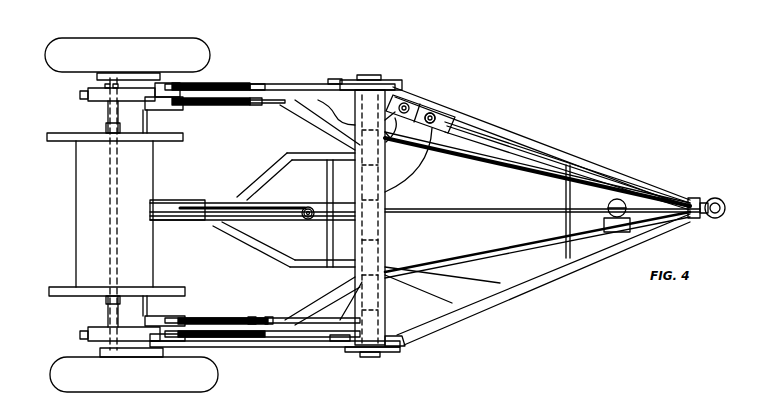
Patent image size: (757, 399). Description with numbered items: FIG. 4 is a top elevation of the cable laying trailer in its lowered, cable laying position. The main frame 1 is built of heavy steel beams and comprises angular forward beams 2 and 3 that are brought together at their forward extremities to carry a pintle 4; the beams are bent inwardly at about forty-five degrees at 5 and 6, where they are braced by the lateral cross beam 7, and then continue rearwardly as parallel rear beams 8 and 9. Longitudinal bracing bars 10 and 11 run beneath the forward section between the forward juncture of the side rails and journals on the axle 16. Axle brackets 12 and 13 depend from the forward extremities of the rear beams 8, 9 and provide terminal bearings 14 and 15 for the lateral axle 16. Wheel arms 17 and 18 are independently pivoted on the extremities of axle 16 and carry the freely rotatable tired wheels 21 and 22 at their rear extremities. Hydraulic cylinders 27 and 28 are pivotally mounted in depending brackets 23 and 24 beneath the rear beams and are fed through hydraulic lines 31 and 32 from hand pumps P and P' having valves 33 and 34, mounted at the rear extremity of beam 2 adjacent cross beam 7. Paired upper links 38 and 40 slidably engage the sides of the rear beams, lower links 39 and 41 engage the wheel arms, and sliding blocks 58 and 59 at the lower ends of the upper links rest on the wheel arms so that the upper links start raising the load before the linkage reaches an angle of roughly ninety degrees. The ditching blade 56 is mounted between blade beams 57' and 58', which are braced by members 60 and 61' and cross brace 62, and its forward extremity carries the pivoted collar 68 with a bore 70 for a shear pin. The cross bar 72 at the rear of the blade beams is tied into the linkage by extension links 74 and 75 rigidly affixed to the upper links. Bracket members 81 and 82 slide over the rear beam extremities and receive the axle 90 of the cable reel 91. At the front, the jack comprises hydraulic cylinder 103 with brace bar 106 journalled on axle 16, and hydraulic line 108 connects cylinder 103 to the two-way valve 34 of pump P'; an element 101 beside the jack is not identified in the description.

The main frame 1 is at (515, 124).
The angular forward beam 2 is at (532, 142).
The angular forward beam 3 is at (525, 276).
The pintle 4 is at (713, 198).
The inward bend of beam 2 5 is at (395, 94).
The inward bend of beam 3 6 is at (402, 334).
The lateral cross beam 7 is at (385, 233).
The rear beam 8 is at (80, 94).
The rear beam 9 is at (80, 334).
The longitudinal bracing bar 10 is at (474, 171).
The longitudinal bracing bar 11 is at (469, 247).
The axle bracket 12 is at (385, 80).
The axle bracket 13 is at (392, 347).
The terminal bearing 14 is at (365, 75).
The terminal bearing 15 is at (370, 353).
The lateral axle 16 is at (385, 302).
The wheel arm 17 is at (162, 83).
The wheel arm 18 is at (170, 348).
The tired wheel 21 is at (163, 38).
The tired wheel 22 is at (55, 382).
The depending bracket 23 is at (336, 79).
The depending bracket 24 is at (345, 347).
The hydraulic cylinder 27 is at (296, 84).
The hydraulic cylinder 28 is at (306, 347).
The hydraulic line 31 is at (325, 126).
The hydraulic line 32 is at (403, 172).
The valve 33 is at (416, 98).
The valve 34 is at (446, 112).
The upper link 38 is at (228, 83).
The lower link 39 is at (257, 84).
The upper link 40 is at (224, 352).
The lower link 41 is at (268, 317).
The ditching blade 56 is at (216, 222).
The blade beam 57' is at (252, 229).
The sliding block 58 is at (252, 111).
The blade beam 58' is at (252, 200).
The sliding block 59 is at (252, 317).
The bracing member 60 is at (260, 173).
The bracing member 61' is at (284, 244).
The cross brace member 62 is at (340, 192).
The cylindrical collar 68 is at (310, 220).
The bore 70 is at (310, 208).
The cross bar 72 is at (118, 126).
The extension link 74 is at (170, 110).
The extension link 75 is at (167, 316).
The bracket member 81 is at (128, 345).
The bracket member 82 is at (128, 95).
The axle of cable reel 90 is at (95, 214).
The cable reel 91 is at (112, 214).
The support block 101 is at (616, 232).
The hydraulic cylinder 103 is at (626, 200).
The brace bar 106 is at (530, 212).
The hydraulic line 108 is at (560, 165).
The hydraulic hand pump P is at (407, 93).
The hydraulic hand pump P' is at (442, 99).